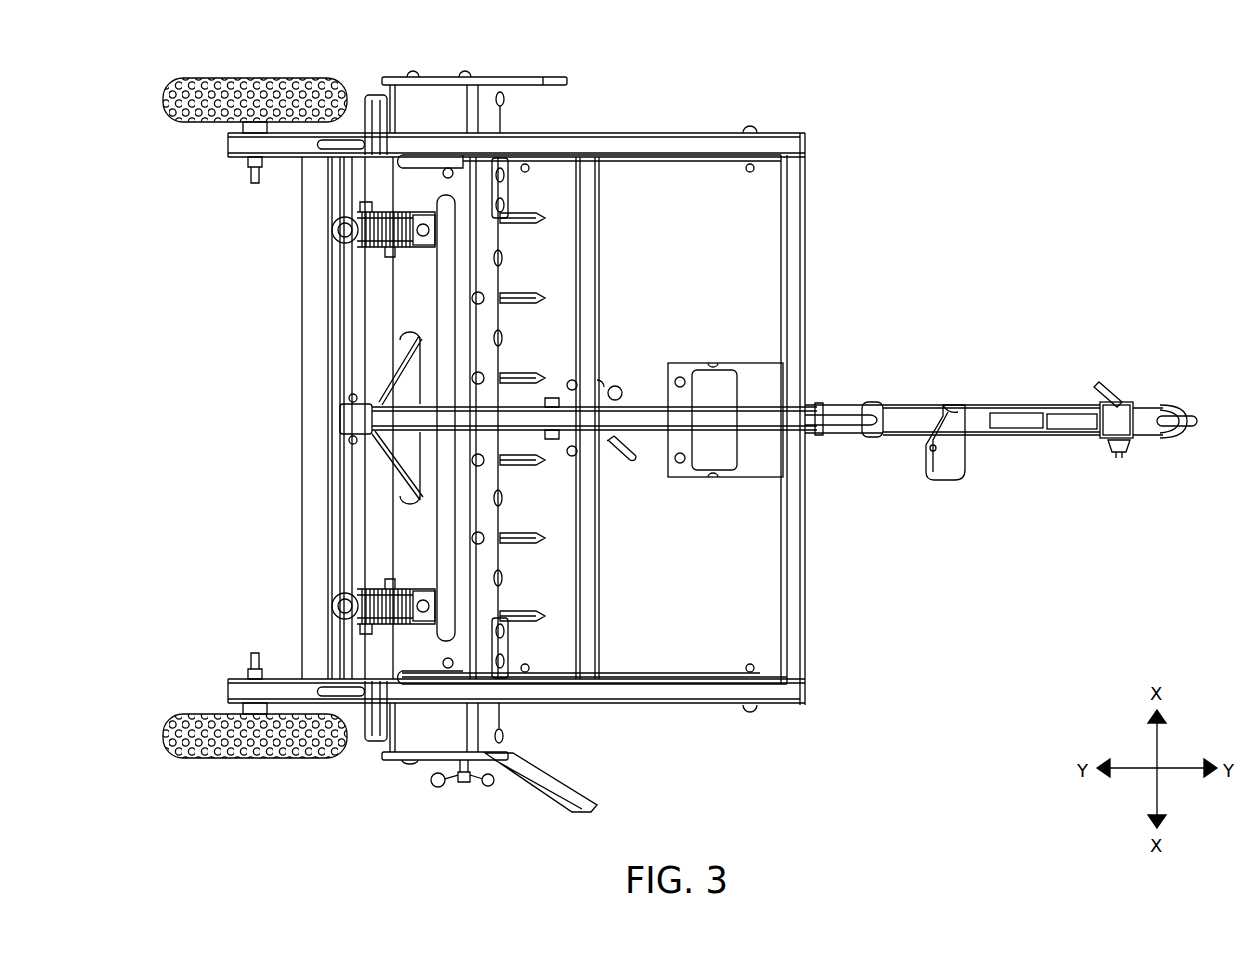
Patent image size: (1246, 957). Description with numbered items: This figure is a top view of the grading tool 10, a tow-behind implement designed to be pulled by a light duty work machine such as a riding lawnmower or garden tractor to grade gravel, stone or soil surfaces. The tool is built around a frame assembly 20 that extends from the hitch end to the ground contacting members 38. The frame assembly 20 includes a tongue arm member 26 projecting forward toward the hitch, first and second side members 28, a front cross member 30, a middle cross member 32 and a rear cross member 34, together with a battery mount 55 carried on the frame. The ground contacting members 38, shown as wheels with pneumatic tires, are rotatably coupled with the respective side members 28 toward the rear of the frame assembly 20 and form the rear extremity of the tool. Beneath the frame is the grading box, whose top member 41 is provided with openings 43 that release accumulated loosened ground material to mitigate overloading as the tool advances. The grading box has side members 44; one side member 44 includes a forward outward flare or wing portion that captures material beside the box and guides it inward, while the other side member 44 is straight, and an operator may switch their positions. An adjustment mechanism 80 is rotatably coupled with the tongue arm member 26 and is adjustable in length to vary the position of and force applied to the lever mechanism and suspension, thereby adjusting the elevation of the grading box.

The grading tool 10 is at (1140, 131).
The frame assembly 20 is at (806, 137).
The tongue arm member 26 is at (1022, 405).
The side member 28 is at (683, 133).
The front cross member 30 is at (806, 230).
The middle cross member 32 is at (600, 230).
The rear cross member 34 is at (306, 228).
The ground contacting members 38 is at (196, 78).
The top member 41 is at (412, 302).
The openings 43 is at (447, 237).
The side members 44 is at (538, 77).
The battery mount 55 is at (713, 360).
The adjustment mechanism 80 is at (908, 404).